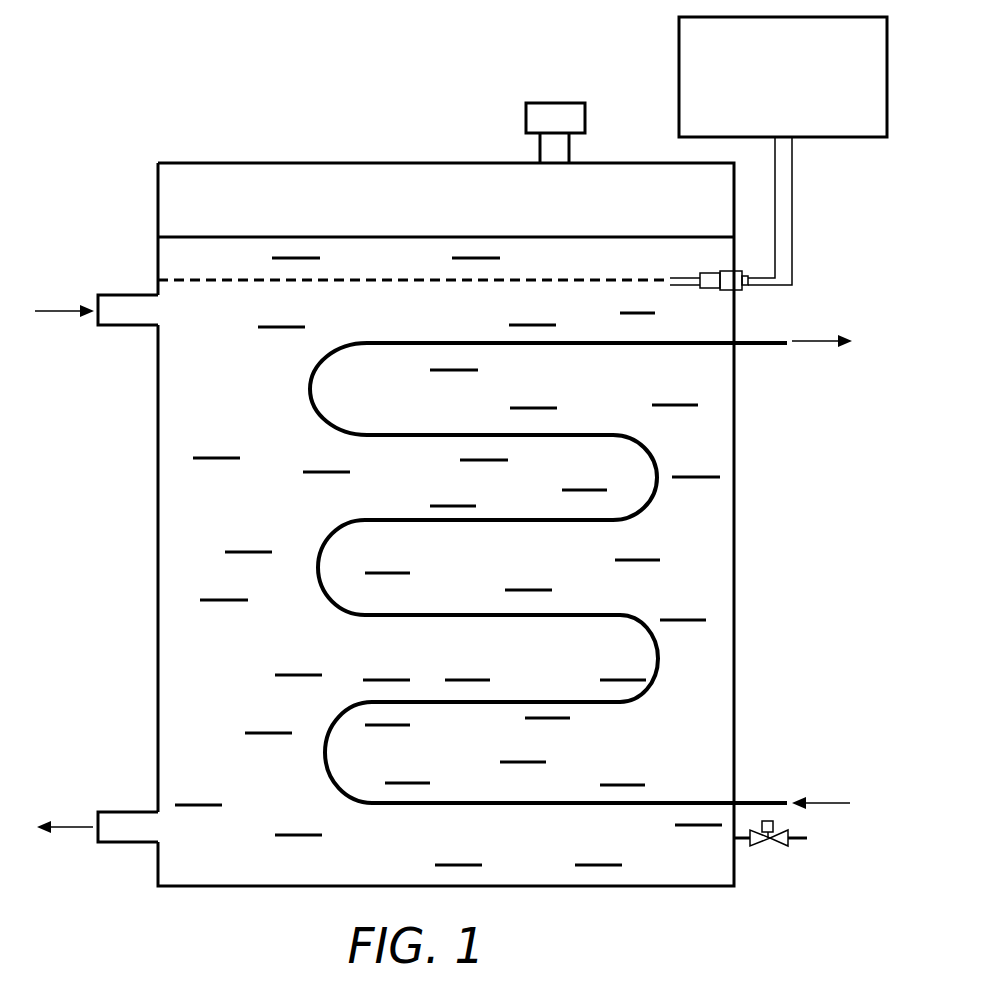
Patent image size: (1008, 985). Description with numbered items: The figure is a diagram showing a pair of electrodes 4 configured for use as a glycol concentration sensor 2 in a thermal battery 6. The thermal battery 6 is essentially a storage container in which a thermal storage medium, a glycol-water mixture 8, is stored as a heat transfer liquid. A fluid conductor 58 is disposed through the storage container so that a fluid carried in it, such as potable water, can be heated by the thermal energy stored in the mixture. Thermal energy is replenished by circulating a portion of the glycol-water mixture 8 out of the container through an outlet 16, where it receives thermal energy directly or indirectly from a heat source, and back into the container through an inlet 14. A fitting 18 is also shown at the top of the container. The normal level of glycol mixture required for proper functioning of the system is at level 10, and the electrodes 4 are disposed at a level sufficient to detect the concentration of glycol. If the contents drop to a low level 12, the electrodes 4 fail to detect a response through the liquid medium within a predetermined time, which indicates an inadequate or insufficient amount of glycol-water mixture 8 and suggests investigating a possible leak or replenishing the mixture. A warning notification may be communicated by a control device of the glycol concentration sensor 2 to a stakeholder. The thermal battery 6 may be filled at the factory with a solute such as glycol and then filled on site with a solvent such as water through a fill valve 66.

The glycol concentration sensor 2 is at (692, 53).
The electrodes 4 is at (670, 278).
The thermal battery 6 is at (734, 454).
The glycol-water mixture 8 is at (268, 411).
The level 10 is at (283, 237).
The low level 12 is at (640, 283).
The inlet 14 is at (124, 295).
The outlet 16 is at (120, 812).
The vent cap 18 is at (585, 118).
The fluid conductor 58 is at (540, 524).
The fill valve 66 is at (772, 846).